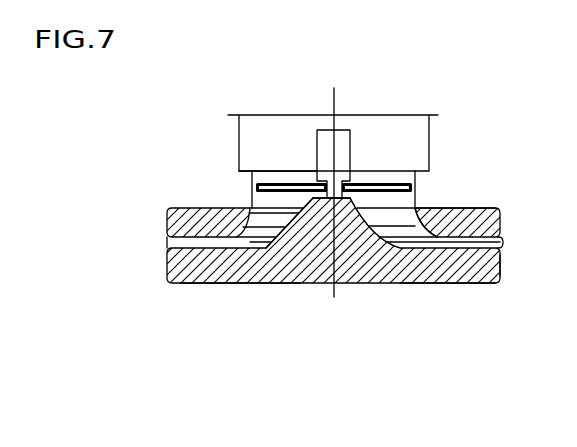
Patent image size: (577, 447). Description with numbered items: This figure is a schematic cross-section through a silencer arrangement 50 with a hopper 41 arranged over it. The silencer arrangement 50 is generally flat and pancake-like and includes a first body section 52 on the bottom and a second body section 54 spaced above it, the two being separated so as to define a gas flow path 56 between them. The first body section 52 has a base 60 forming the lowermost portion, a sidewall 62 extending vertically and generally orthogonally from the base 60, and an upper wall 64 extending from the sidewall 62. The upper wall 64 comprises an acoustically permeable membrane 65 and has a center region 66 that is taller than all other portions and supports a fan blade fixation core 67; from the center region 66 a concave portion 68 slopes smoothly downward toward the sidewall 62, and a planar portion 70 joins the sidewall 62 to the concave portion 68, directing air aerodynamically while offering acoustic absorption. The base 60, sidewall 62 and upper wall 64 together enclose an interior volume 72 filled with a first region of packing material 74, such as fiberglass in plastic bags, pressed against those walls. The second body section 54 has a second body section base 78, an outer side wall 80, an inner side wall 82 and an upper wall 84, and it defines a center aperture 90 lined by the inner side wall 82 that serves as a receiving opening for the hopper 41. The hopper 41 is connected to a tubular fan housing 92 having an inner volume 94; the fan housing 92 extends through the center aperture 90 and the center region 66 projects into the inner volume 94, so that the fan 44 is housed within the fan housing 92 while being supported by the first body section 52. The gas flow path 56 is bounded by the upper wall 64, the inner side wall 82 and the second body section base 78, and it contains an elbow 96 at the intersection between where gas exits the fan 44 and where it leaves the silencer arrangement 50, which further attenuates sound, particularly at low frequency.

The hopper 41 is at (432, 132).
The fan 44 is at (257, 184).
The silencer arrangement 50 is at (142, 182).
The first body section 52 is at (477, 284).
The second body section 54 is at (483, 208).
The gas flow path 56 is at (256, 246).
The base 60 is at (212, 285).
The sidewall 62 is at (171, 265).
The upper wall 64 is at (503, 241).
The acoustically permeable membrane 65 is at (484, 247).
The center region 66 is at (342, 203).
The fan blade fixation core 67 is at (338, 197).
The concave portion 68 is at (411, 224).
The planar portion 70 is at (186, 209).
The interior volume 72 is at (423, 275).
The packing material 74 is at (490, 268).
The second body section base 78 is at (194, 243).
The outer side wall 80 is at (168, 212).
The inner side wall 82 is at (258, 210).
The upper wall 84 is at (500, 228).
The center aperture 90 is at (433, 224).
The fan housing 92 is at (417, 186).
The inner volume 94 is at (284, 181).
The elbow 96 is at (410, 238).